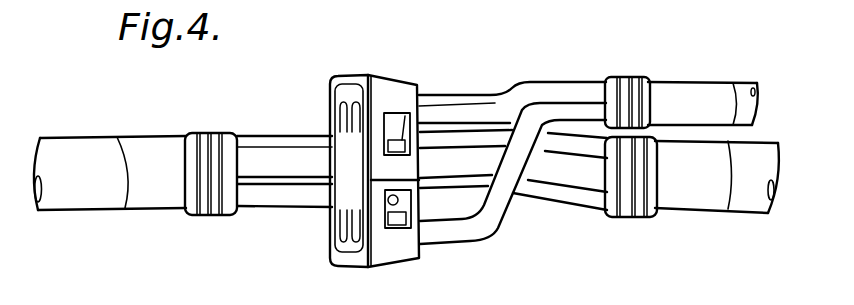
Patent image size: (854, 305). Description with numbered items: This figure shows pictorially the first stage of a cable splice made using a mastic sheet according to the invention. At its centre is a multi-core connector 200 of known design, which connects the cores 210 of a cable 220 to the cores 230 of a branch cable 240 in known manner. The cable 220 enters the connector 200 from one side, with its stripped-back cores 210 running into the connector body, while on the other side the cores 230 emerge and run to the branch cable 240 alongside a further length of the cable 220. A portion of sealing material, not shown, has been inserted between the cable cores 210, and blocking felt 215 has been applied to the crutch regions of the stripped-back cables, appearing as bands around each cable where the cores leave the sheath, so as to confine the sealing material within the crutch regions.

The multi-core connector 200 is at (400, 76).
The cores 210 is at (302, 185).
The blocking felt 215 is at (224, 137).
The cable 220 is at (104, 147).
The cores 230 is at (563, 107).
The branch cable 240 is at (712, 86).